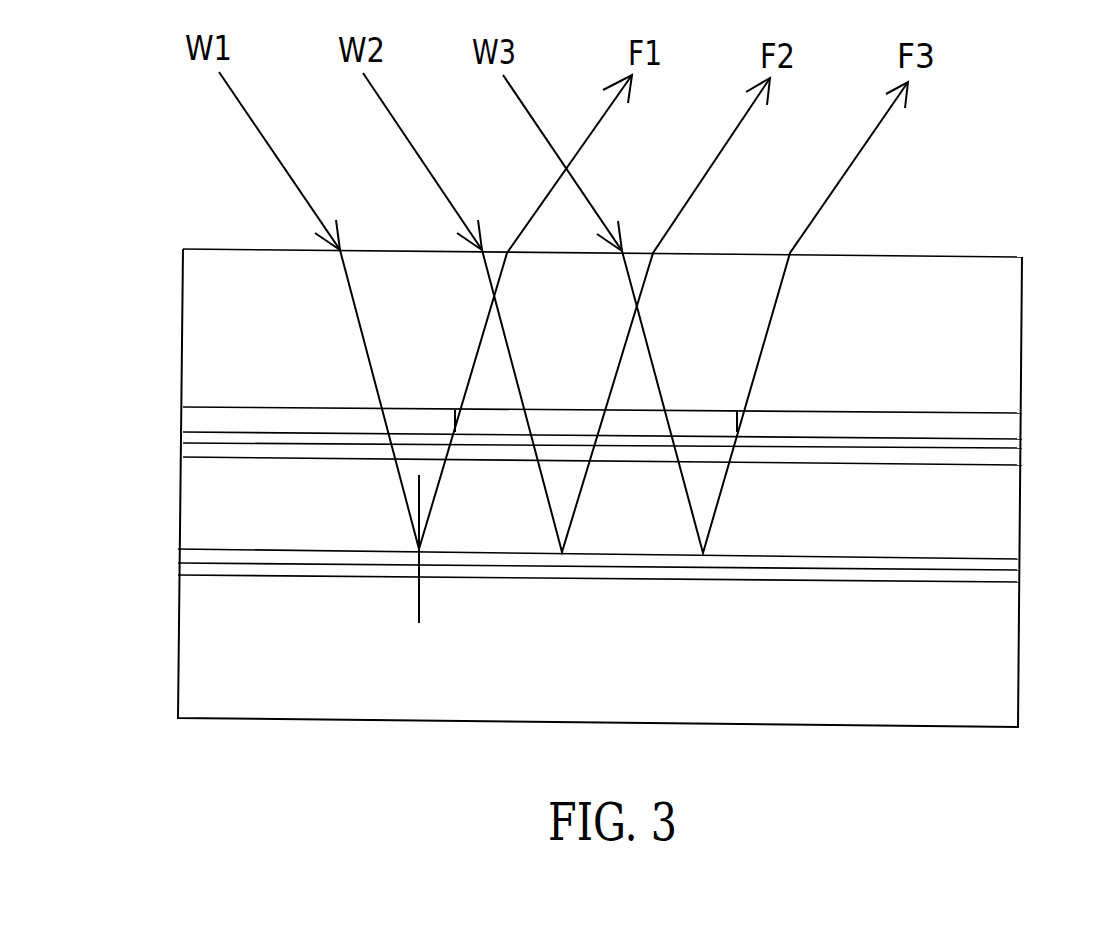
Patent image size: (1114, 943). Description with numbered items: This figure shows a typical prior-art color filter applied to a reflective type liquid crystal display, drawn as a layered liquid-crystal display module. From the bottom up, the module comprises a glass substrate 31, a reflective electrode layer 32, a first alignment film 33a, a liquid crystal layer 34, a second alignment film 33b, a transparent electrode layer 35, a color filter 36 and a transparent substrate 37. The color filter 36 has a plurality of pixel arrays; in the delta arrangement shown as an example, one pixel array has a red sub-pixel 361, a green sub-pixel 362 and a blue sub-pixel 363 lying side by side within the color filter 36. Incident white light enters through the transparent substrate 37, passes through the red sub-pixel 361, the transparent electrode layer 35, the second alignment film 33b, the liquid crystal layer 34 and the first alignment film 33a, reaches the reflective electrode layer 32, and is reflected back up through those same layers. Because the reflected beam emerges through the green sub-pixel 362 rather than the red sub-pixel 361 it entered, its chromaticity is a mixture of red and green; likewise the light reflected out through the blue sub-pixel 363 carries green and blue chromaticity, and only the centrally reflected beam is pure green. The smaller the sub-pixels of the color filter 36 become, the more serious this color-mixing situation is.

The glass substrate 31 is at (1002, 672).
The reflective electrode layer 32 is at (1018, 582).
The first alignment film 33a is at (1016, 568).
The second alignment film 33b is at (1016, 464).
The liquid crystal layer 34 is at (1008, 523).
The transparent electrode layer 35 is at (1012, 449).
The color filter 36 is at (1010, 426).
The transparent substrate 37 is at (1012, 321).
The red sub-pixel 361 is at (244, 424).
The green sub-pixel 362 is at (583, 416).
The blue sub-pixel 363 is at (825, 422).